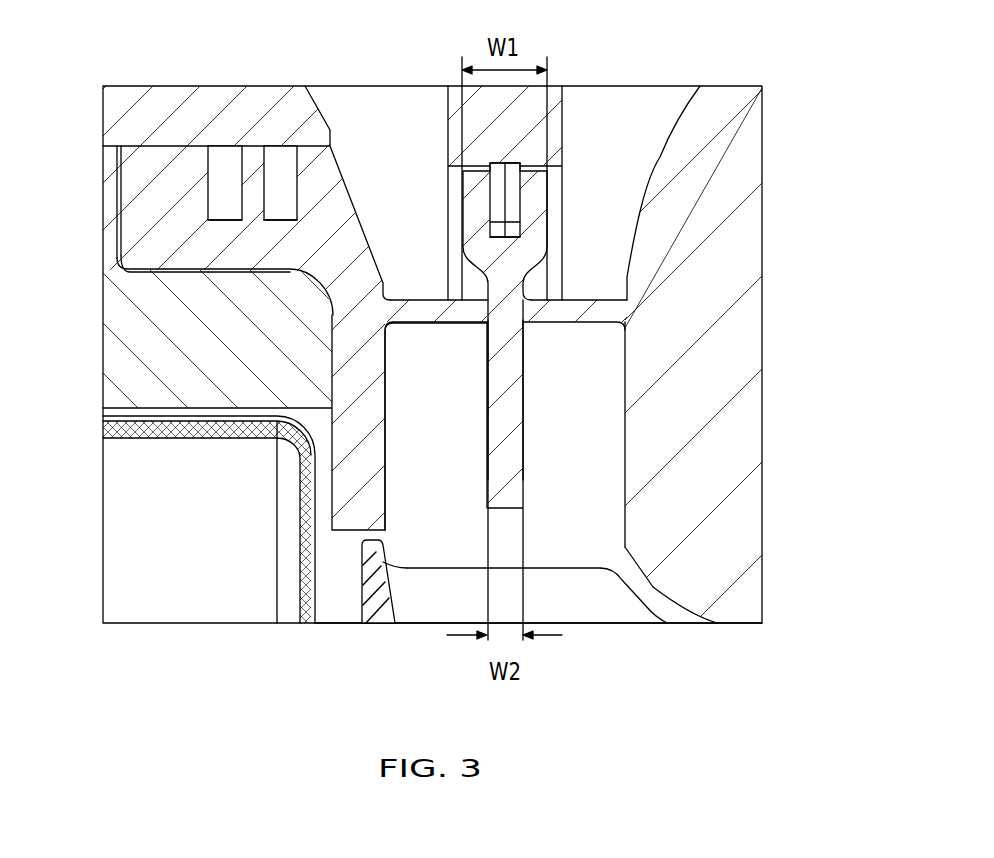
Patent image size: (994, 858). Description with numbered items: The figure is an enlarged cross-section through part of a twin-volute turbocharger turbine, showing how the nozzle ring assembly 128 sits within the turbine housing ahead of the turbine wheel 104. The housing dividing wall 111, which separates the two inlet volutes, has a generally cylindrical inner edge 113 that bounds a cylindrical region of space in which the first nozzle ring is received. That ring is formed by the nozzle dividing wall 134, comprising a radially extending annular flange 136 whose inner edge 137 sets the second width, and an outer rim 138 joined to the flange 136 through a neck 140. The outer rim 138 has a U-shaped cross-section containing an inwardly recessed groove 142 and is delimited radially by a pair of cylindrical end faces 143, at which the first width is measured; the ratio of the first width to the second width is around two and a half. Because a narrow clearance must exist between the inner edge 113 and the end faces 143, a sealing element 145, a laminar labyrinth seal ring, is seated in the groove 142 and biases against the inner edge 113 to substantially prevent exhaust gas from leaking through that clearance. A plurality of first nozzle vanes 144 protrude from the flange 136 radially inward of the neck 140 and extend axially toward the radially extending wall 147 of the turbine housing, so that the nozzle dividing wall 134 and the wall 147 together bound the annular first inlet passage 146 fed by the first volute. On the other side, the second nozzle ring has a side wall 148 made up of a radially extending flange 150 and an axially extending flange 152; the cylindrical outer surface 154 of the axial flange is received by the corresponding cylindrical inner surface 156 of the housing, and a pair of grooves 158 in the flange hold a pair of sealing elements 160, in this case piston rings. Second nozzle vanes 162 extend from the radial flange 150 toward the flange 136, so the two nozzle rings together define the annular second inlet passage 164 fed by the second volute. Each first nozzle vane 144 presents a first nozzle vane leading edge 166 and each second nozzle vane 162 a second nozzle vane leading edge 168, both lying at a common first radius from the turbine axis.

The turbine wheel 104 is at (577, 592).
The housing dividing wall 111 is at (562, 112).
The inner edge 113 is at (450, 167).
The nozzle ring assembly 128 is at (702, 503).
The nozzle dividing wall 134 is at (507, 372).
The flange 136 is at (502, 438).
The inner edge 137 is at (500, 503).
The outer rim 138 is at (476, 218).
The neck 140 is at (537, 265).
The groove 142 is at (523, 230).
The cylindrical end faces 143 is at (532, 170).
The first nozzle vanes 144 is at (552, 310).
The sealing element 145 is at (513, 188).
The first inlet passage 146 is at (578, 510).
The radially extending wall 147 is at (623, 502).
The side wall 148 is at (358, 400).
The radially extending flange 150 is at (358, 473).
The axially extending flange 152 is at (175, 233).
The cylindrical outer surface 154 is at (166, 145).
The cylindrical inner surface 156 is at (140, 146).
The grooves 158 is at (281, 162).
The sealing elements 160 is at (263, 197).
The second nozzle vanes 162 is at (443, 310).
The second inlet passage 164 is at (433, 468).
The first nozzle vane leading edge 166 is at (577, 300).
The second nozzle vane leading edge 168 is at (425, 300).